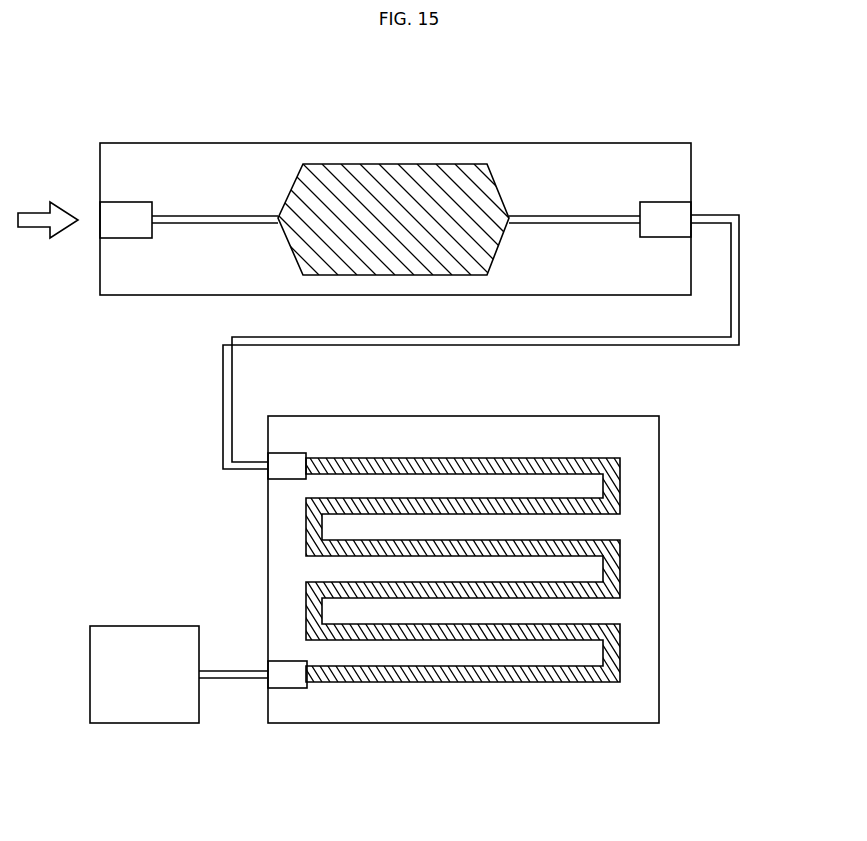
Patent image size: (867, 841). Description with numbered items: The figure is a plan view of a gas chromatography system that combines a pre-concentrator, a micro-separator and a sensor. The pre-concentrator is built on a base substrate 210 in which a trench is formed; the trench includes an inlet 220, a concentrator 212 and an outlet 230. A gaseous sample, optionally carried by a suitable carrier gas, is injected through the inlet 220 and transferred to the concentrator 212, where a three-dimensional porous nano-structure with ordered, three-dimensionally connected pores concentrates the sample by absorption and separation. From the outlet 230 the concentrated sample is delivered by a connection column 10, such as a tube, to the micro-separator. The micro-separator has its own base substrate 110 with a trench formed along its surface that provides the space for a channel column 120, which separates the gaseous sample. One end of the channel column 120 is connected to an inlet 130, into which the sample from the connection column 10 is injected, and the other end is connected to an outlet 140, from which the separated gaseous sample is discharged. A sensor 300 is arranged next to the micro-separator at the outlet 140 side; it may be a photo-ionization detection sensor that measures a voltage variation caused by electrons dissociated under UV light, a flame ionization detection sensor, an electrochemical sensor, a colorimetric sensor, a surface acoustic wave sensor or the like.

The connection column 10 is at (739, 280).
The base substrate 110 is at (383, 435).
The channel column 120 is at (484, 458).
The inlet 130 is at (284, 463).
The outlet 140 is at (286, 675).
The base substrate 210 is at (270, 200).
The concentrator 212 is at (395, 178).
The inlet 220 is at (127, 213).
The outlet 230 is at (666, 213).
The sensor 300 is at (147, 635).